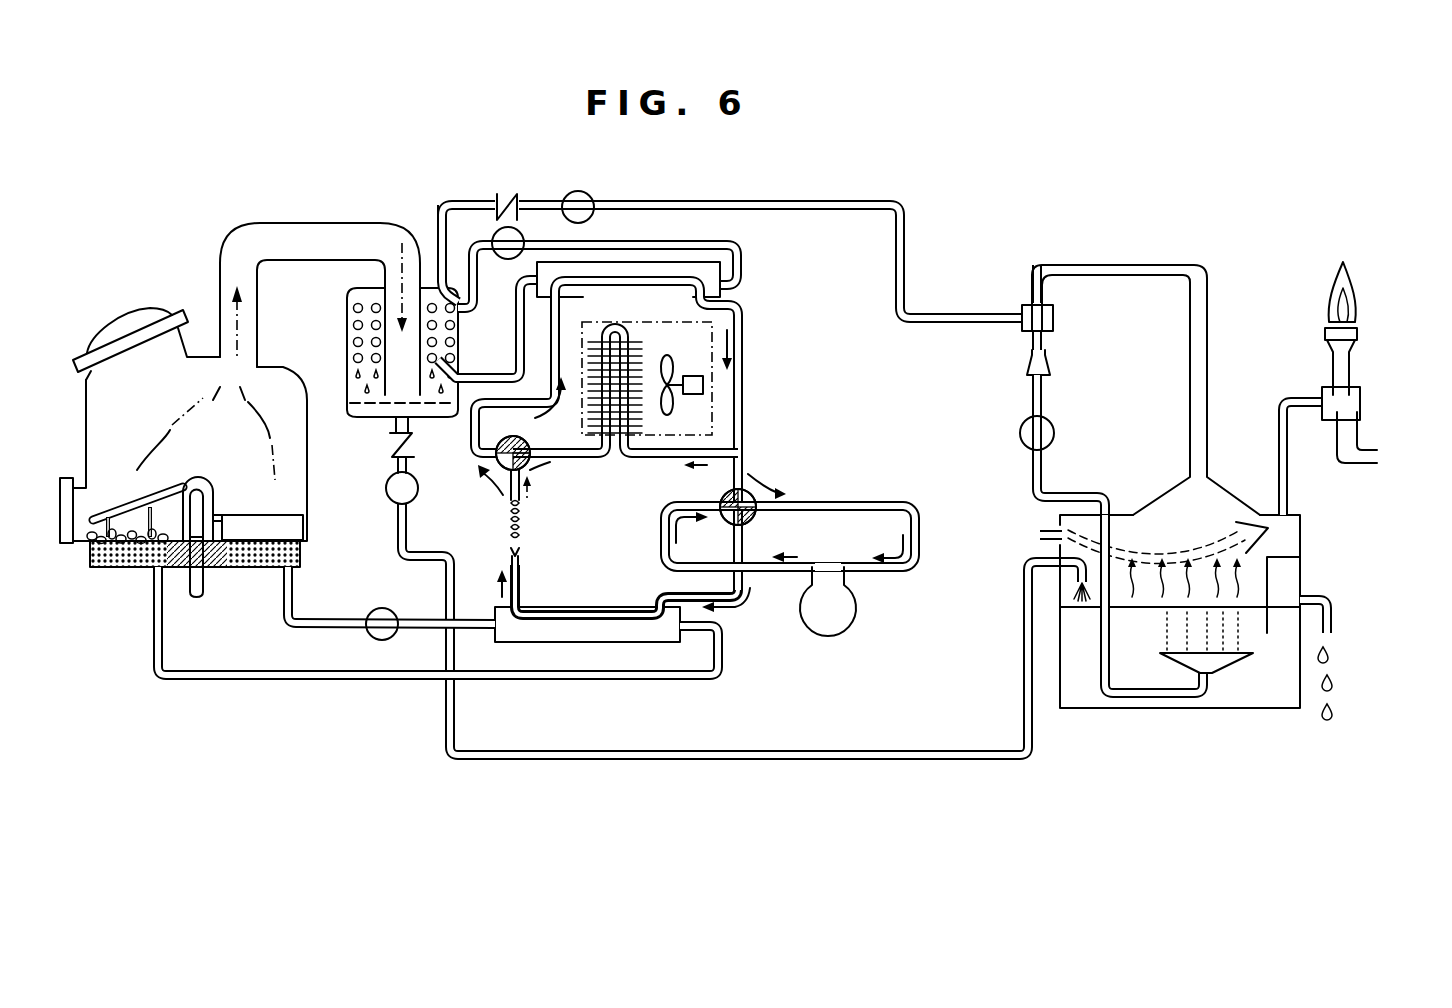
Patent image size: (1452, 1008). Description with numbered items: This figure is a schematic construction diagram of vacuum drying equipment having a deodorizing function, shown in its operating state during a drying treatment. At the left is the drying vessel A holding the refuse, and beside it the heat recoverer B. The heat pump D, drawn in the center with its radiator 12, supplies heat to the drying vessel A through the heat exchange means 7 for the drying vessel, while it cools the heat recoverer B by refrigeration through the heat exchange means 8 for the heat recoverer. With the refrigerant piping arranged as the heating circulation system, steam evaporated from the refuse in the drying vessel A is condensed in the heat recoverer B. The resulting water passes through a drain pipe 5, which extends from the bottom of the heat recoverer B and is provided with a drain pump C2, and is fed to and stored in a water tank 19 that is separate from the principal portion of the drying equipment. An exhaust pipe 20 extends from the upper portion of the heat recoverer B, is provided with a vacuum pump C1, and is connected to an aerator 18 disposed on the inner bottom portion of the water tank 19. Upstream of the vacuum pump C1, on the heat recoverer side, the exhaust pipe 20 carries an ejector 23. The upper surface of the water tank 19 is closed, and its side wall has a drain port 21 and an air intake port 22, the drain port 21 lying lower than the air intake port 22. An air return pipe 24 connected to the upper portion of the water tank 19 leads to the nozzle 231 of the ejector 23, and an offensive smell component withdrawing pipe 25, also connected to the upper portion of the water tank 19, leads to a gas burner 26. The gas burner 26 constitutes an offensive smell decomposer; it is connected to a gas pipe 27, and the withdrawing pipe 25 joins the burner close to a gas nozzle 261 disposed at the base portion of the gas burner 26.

The drain pipe 5 is at (445, 583).
The heat exchange means for the drying vessel 7 is at (343, 684).
The heat exchange means for the heat recoverer 8 is at (620, 238).
The radiator 12 is at (706, 385).
The aerator 18 is at (1240, 664).
The water tank 19 is at (1245, 710).
The exhaust pipe 20 is at (780, 200).
The drain port 21 is at (1328, 600).
The air intake port 22 is at (1058, 530).
The ejector 23 is at (1055, 318).
The nozzle 231 is at (1032, 335).
The air return pipe 24 is at (1207, 352).
The offensive smell component withdrawing pipe 25 is at (1277, 412).
The gas burner 26 is at (1358, 348).
The gas nozzle 261 is at (1360, 398).
The gas pipe 27 is at (1355, 466).
The drying vessel A is at (76, 433).
The heat recoverer B is at (343, 320).
The vacuum pump C1 is at (1054, 433).
The drain pump C2 is at (388, 500).
The heat pump D is at (755, 417).